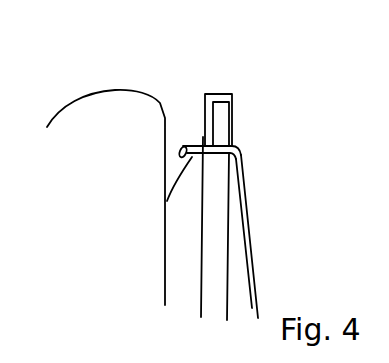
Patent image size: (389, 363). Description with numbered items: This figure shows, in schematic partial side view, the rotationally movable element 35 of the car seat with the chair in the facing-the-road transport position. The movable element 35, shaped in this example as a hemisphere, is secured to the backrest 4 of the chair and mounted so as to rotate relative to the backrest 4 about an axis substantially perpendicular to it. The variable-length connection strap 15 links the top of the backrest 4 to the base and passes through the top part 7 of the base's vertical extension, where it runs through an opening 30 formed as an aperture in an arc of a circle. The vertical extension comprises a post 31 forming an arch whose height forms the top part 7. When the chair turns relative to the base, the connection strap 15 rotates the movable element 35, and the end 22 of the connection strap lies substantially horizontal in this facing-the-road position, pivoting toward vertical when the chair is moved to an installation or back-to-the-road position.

The backrest 4 is at (83, 103).
The top part of the vertical extension 7 is at (218, 115).
The connection strap 15 is at (202, 147).
The end of the connection strap 22 is at (185, 147).
The opening 30 is at (220, 140).
The post 31 is at (218, 276).
The rotationally movable element 35 is at (172, 169).